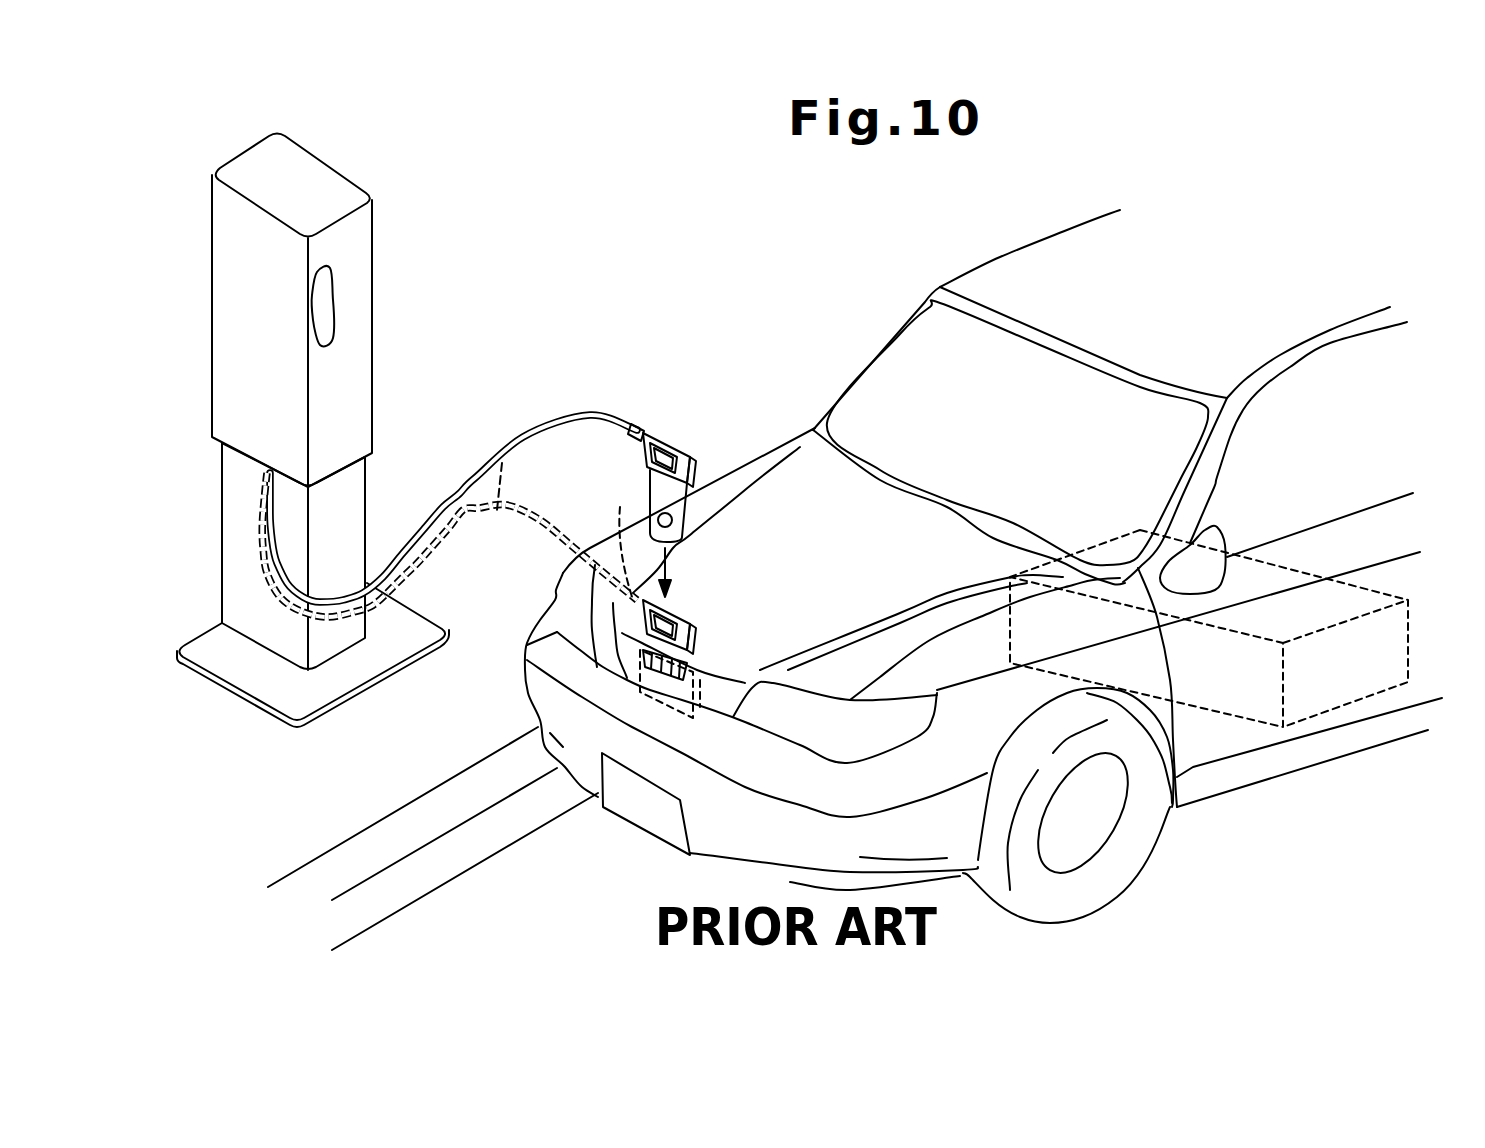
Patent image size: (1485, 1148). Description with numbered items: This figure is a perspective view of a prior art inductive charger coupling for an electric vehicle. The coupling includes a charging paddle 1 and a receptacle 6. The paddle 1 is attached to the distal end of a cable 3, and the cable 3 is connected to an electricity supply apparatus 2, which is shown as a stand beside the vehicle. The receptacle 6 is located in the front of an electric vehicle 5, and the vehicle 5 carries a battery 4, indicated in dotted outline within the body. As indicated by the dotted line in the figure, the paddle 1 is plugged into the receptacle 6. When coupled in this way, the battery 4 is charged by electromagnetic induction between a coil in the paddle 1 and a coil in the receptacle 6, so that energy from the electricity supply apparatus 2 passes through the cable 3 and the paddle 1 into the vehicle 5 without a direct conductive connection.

The charging paddle 1 is at (645, 476).
The electricity supply apparatus 2 is at (364, 357).
The cable 3 is at (500, 452).
The battery 4 is at (1385, 592).
The electric vehicle 5 is at (905, 283).
The receptacle 6 is at (698, 707).